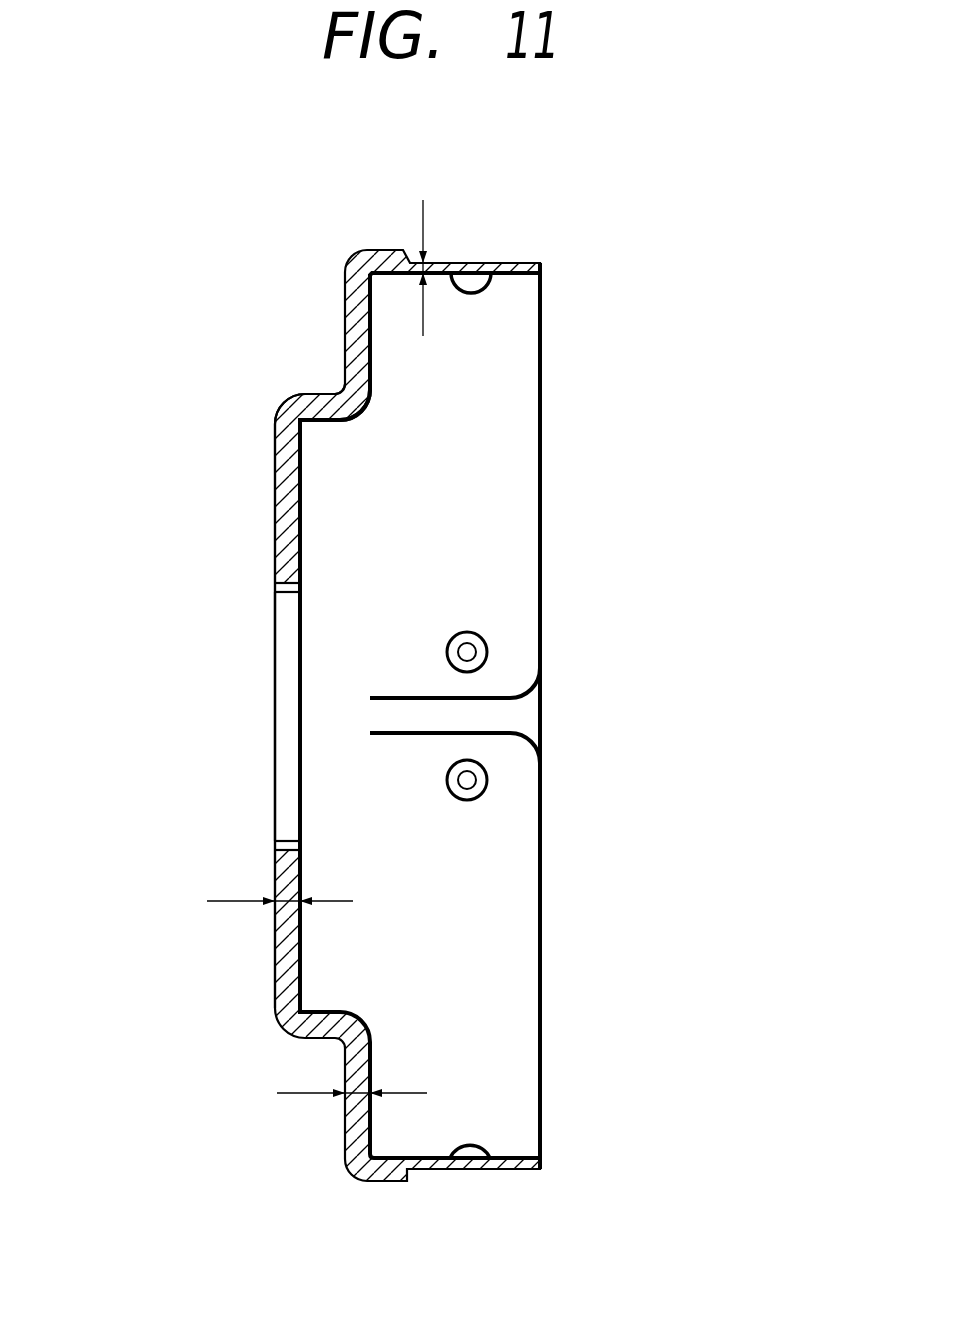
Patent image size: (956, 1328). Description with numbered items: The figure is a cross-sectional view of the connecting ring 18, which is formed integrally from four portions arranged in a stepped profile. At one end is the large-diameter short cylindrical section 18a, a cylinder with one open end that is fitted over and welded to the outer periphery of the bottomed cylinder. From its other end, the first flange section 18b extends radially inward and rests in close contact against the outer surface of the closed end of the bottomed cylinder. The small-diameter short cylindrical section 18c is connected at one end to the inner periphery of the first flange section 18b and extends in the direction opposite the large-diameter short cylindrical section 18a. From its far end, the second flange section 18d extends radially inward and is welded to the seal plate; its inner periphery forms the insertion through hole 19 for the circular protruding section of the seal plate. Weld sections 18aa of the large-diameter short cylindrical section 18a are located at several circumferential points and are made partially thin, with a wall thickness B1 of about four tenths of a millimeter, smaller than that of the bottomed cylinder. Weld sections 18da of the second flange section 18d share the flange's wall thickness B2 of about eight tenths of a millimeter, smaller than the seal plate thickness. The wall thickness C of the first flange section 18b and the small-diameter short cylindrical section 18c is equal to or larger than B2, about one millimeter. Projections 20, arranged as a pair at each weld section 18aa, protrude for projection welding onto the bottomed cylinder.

The connecting ring 18 is at (322, 310).
The large-diameter short cylindrical section 18a is at (362, 252).
The weld sections 18aa is at (517, 262).
The first flange section 18b is at (347, 368).
The small-diameter short cylindrical section 18c is at (325, 418).
The second flange section 18d is at (303, 960).
The weld sections 18da is at (283, 543).
The insertion through hole 19 is at (278, 835).
The projections 20 is at (468, 290).
The wall thickness B1 is at (442, 262).
The wall thickness B2 is at (278, 912).
The wall thickness C is at (348, 1108).